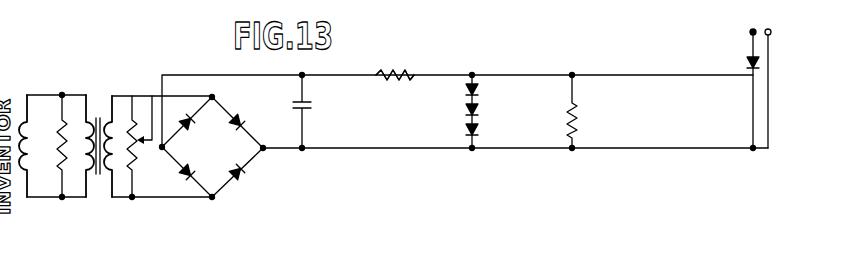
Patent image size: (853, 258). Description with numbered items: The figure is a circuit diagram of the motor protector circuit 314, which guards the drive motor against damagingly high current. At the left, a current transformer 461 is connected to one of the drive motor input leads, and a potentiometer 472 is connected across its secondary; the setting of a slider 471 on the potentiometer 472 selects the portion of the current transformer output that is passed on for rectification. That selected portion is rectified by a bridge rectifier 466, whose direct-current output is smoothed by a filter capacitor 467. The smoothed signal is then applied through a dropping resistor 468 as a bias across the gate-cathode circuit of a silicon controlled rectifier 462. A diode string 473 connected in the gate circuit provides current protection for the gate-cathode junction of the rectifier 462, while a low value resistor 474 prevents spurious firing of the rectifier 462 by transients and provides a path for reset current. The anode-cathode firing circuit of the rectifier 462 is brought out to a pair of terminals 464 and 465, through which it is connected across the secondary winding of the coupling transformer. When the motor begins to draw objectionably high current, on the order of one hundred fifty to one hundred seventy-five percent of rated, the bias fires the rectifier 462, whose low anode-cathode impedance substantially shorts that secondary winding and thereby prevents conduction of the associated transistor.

The current transformer 461 is at (94, 101).
The slider 471 is at (146, 136).
The potentiometer 472 is at (137, 158).
The bridge rectifier 466 is at (226, 157).
The filter capacitor 467 is at (305, 110).
The dropping resistor 468 is at (380, 78).
The motor protector circuit 314 is at (410, 64).
The diode string 473 is at (476, 108).
The low value resistor 474 is at (578, 125).
The silicon controlled rectifier 462 is at (748, 63).
The terminal 464 is at (752, 31).
The terminal 465 is at (772, 32).